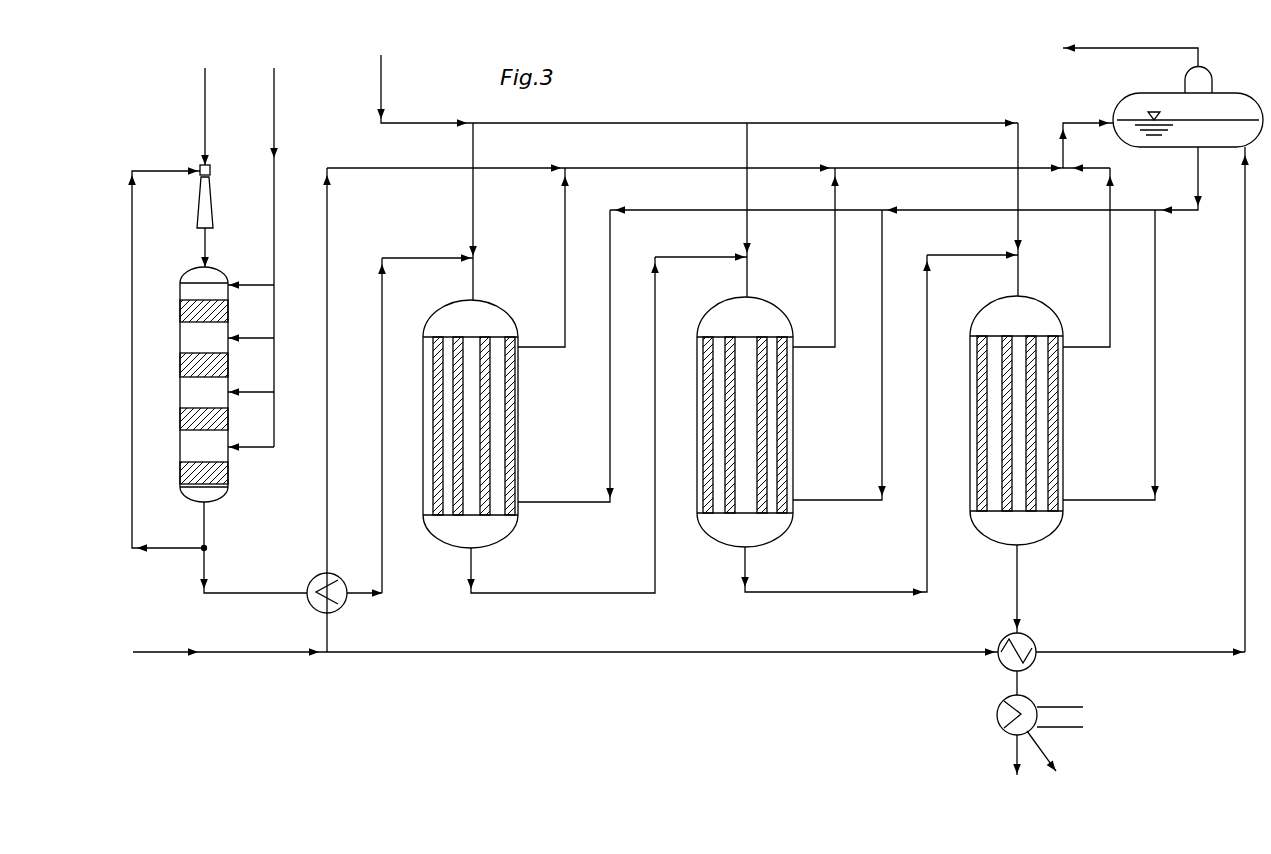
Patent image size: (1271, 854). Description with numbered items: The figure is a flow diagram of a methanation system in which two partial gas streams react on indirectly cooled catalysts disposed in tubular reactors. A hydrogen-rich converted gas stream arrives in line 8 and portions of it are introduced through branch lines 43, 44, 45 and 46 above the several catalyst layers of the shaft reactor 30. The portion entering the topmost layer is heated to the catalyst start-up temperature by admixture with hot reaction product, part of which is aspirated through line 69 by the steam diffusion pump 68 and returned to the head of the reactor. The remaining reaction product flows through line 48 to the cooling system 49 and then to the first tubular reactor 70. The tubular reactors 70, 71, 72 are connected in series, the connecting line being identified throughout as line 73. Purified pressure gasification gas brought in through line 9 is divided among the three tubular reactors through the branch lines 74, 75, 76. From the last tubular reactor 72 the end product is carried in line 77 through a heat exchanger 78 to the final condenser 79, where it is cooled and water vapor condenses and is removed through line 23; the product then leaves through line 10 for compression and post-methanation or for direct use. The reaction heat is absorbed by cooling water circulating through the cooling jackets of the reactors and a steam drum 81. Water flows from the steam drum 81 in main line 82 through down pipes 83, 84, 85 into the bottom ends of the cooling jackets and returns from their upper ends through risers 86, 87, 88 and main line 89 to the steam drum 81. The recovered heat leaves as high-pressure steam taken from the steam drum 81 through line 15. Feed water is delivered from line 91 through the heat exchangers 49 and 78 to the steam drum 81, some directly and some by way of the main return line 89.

The hydrogen-rich converted gas stream line 8 is at (282, 257).
The purified pressure gasification gas line 9 is at (699, 177).
The end product line 10 is at (1004, 759).
The high-pressure steam line 15 is at (1130, 59).
The condensed water removal line 23 is at (1057, 755).
The shaft reactor 30 is at (220, 384).
The branch line 43 is at (251, 272).
The branch line 44 is at (251, 326).
The branch line 45 is at (251, 380).
The branch line 46 is at (251, 435).
The reaction product line 48 is at (253, 547).
The cooling system 49 is at (344, 599).
The steam diffusion pump 68 is at (220, 167).
The recirculation line 69 is at (167, 359).
The first tubular reactor 70 is at (478, 431).
The second tubular reactor 71 is at (748, 431).
The last tubular reactor 72 is at (1021, 429).
The connecting line 73 is at (627, 410).
The branch line 74 is at (427, 243).
The branch line 75 is at (701, 243).
The branch line 76 is at (972, 239).
The end product line 77 is at (1032, 589).
The heat exchanger 78 is at (1007, 663).
The final condenser 79 is at (1030, 714).
The steam drum 81 is at (1188, 358).
The main line 82 is at (906, 180).
The down pipe 83 is at (566, 356).
The down pipe 84 is at (839, 355).
The down pipe 85 is at (1111, 355).
The riser 86 is at (543, 257).
The riser 87 is at (816, 257).
The riser 88 is at (1088, 257).
The main return line 89 is at (720, 145).
The feed water line 91 is at (689, 642).